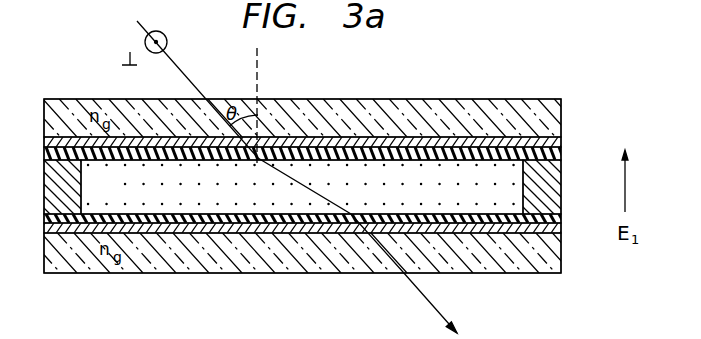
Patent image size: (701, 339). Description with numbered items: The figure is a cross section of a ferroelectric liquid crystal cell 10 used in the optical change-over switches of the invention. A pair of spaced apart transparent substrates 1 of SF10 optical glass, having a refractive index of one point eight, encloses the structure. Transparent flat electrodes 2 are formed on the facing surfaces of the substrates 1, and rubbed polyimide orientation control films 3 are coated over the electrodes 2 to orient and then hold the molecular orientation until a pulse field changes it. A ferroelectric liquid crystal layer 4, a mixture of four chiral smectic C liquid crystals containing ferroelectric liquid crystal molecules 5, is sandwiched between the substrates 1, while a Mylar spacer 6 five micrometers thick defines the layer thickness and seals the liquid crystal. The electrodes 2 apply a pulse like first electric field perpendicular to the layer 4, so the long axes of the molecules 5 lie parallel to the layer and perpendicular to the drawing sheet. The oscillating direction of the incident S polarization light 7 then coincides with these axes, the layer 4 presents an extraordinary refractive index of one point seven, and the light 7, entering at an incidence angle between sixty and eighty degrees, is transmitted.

The transparent substrate 1 is at (428, 112).
The transparent flat electrode 2 is at (557, 142).
The orientation control film 3 is at (557, 152).
The ferroelectric liquid crystal layer 4 is at (408, 192).
The ferroelectric liquid crystal molecule 5 is at (477, 203).
The spacer 6 is at (557, 181).
The S polarization light 7 is at (145, 35).
The ferroelectric liquid crystal cell 10 is at (509, 69).